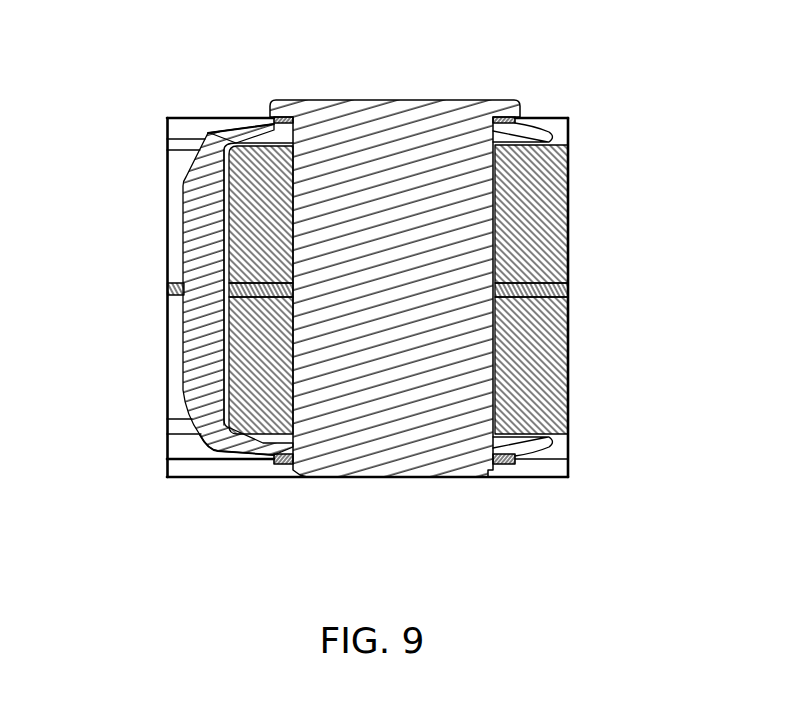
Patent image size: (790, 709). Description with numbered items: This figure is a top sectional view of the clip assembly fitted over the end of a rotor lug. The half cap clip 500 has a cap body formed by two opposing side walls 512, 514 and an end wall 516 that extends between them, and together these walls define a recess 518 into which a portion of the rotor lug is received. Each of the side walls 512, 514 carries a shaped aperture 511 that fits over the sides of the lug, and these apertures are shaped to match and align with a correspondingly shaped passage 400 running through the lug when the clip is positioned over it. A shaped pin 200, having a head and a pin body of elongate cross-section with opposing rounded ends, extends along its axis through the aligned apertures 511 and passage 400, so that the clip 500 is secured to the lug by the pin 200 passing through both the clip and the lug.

The shaped pin 200 is at (437, 155).
The passage 400 is at (495, 395).
The half cap clip 500 is at (217, 322).
The shaped aperture 511 is at (282, 465).
The side wall 512 is at (208, 132).
The side wall 514 is at (267, 447).
The end wall 516 is at (205, 240).
The recess 518 is at (227, 377).